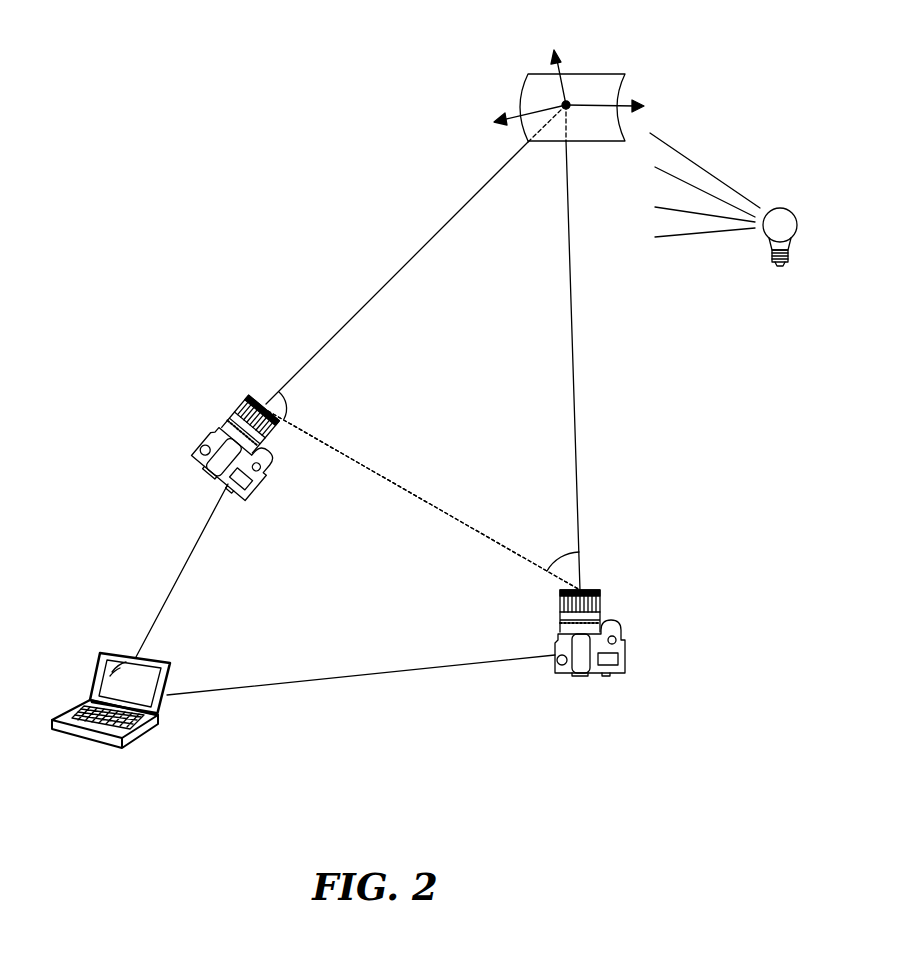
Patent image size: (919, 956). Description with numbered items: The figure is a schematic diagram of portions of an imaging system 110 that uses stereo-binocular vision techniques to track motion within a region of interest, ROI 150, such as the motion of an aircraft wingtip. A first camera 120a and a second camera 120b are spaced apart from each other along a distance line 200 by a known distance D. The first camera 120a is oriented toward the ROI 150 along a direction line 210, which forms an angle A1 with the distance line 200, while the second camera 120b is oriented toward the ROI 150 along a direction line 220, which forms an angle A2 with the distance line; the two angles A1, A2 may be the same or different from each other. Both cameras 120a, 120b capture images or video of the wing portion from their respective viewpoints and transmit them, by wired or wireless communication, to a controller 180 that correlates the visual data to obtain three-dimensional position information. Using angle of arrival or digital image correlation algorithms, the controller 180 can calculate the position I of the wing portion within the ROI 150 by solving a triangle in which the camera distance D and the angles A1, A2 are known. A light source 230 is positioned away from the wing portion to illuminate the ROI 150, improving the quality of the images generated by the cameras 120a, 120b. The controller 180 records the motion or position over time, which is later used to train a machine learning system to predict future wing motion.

The imaging system 110 is at (155, 356).
The first camera 120a is at (207, 433).
The second camera 120b is at (627, 653).
The region of interest (ROI) 150 is at (530, 87).
The position I is at (572, 100).
The controller 180 is at (100, 653).
The distance line 200 is at (350, 458).
The direction line 210 is at (458, 210).
The direction line 220 is at (572, 307).
The light source 230 is at (798, 220).
The angle A1 is at (287, 408).
The angle A2 is at (562, 553).
The distance D is at (413, 493).